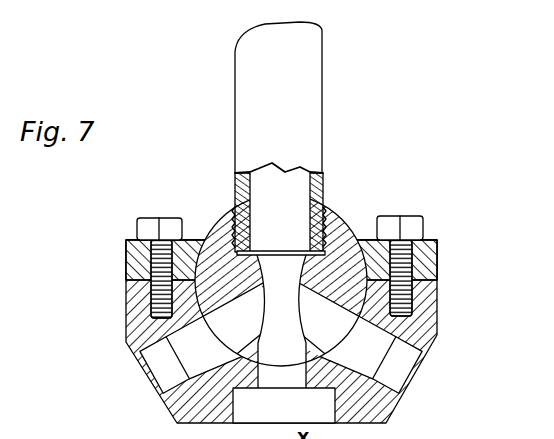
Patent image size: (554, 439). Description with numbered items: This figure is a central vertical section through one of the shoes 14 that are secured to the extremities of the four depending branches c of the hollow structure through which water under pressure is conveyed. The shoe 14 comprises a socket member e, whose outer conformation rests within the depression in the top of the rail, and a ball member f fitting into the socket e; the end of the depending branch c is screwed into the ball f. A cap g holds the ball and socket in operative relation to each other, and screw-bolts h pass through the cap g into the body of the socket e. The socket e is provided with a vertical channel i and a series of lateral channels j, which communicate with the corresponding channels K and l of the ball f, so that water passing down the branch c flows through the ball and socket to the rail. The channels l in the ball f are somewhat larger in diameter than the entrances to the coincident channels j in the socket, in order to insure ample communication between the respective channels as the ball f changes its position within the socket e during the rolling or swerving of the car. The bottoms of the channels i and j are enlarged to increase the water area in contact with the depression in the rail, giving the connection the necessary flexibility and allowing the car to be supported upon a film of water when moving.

The depending branch c is at (305, 117).
The ball member f is at (281, 282).
The screw-bolts h is at (145, 218).
The cap g is at (438, 240).
The socket member e is at (437, 332).
The channels of the ball l is at (281, 324).
The lateral channels j is at (281, 349).
The channel of the ball K is at (281, 320).
The vertical channel i is at (284, 395).
The shoe 14 is at (100, 295).